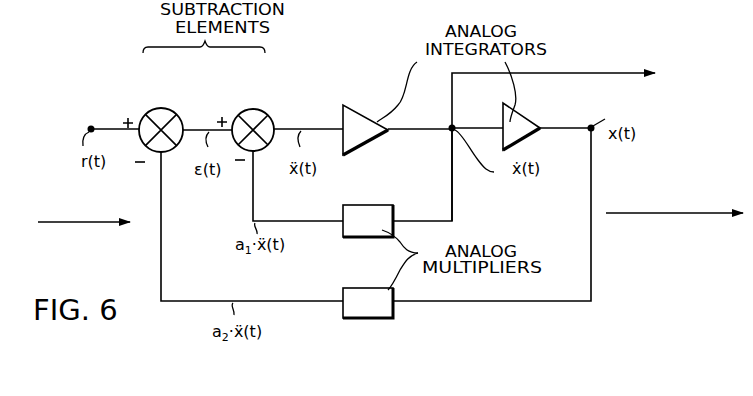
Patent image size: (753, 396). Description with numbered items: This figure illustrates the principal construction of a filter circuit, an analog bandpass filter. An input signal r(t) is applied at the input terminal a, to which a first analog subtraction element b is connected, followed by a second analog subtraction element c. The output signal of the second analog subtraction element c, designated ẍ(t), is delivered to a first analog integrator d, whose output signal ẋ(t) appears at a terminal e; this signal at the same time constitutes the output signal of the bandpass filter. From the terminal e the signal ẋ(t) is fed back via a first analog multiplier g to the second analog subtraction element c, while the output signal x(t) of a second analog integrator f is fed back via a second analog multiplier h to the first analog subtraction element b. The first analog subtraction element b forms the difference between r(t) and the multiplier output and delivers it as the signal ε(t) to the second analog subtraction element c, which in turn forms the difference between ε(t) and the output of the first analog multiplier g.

The input terminal a is at (91, 129).
The first analog subtraction element b is at (161, 108).
The second analog subtraction element c is at (253, 109).
The first analog integrator d is at (373, 122).
The terminal e is at (452, 128).
The second analog integrator f is at (525, 121).
The first analog multiplier g is at (378, 212).
The second analog multiplier h is at (377, 294).